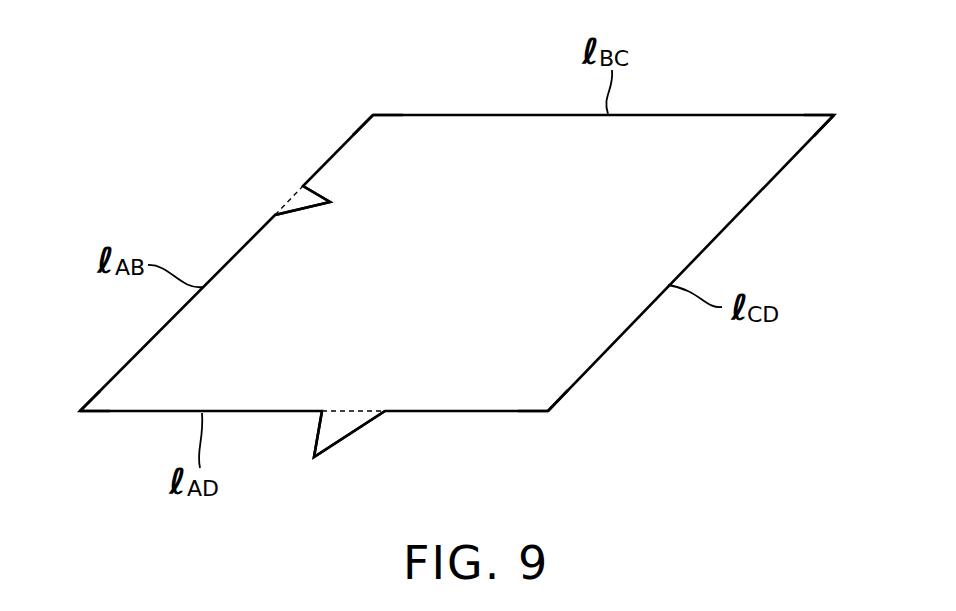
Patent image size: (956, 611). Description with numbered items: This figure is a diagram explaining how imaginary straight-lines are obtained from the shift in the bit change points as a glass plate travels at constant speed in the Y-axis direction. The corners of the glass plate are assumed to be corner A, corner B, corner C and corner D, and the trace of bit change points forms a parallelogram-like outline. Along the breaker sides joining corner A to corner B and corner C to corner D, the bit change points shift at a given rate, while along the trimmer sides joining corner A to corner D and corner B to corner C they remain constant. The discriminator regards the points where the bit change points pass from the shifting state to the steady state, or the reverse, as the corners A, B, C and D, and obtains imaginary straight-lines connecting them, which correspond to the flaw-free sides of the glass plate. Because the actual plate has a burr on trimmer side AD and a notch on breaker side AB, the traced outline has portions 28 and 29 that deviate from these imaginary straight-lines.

The deviating portion 28 is at (338, 435).
The deviating portion 29 is at (307, 200).
The corner A is at (79, 415).
The corner B is at (378, 105).
The corner C is at (834, 113).
The corner D is at (546, 419).